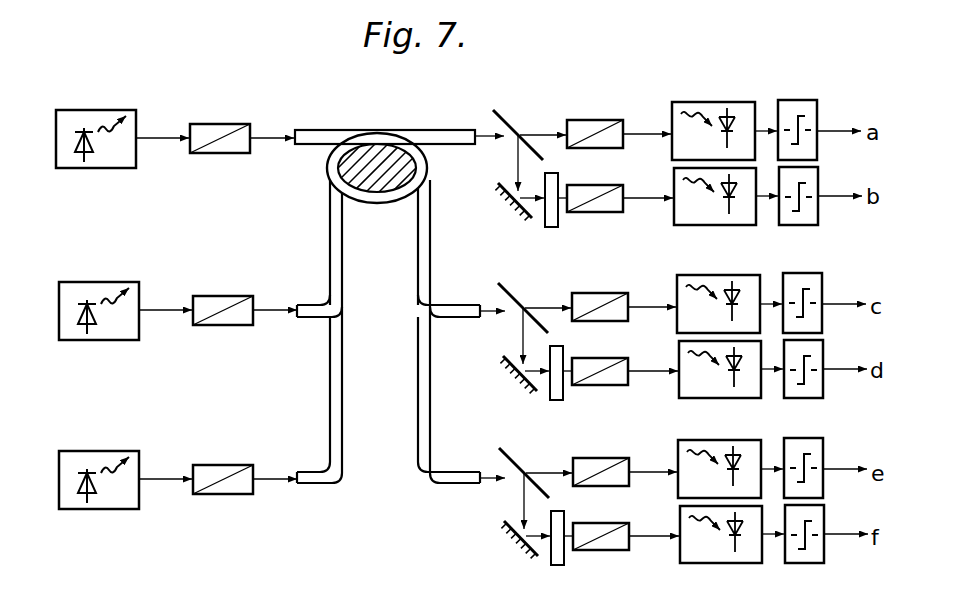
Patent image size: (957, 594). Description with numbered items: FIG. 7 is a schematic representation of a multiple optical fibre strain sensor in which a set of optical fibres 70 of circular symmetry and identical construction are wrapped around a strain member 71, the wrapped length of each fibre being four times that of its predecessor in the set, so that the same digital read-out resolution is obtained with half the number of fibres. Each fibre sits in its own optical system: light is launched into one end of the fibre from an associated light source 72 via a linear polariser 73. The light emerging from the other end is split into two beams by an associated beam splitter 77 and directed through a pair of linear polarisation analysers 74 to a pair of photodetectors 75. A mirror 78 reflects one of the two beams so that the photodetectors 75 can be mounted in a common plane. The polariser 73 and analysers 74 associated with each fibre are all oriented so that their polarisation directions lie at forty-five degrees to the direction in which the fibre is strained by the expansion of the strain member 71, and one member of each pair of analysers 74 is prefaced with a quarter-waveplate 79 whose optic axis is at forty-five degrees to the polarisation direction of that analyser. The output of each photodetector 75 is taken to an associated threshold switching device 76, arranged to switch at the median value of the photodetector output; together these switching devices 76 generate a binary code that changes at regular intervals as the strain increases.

The optical fibres 70 is at (310, 130).
The strain member 71 is at (378, 148).
The light source 72 is at (105, 110).
The linear polariser 73 is at (213, 124).
The linear polarisation analysers 74 is at (585, 120).
The photodetectors 75 is at (700, 102).
The threshold switching device 76 is at (797, 100).
The beam splitter 77 is at (505, 114).
The mirror 78 is at (500, 180).
The quarter-waveplate 79 is at (545, 228).